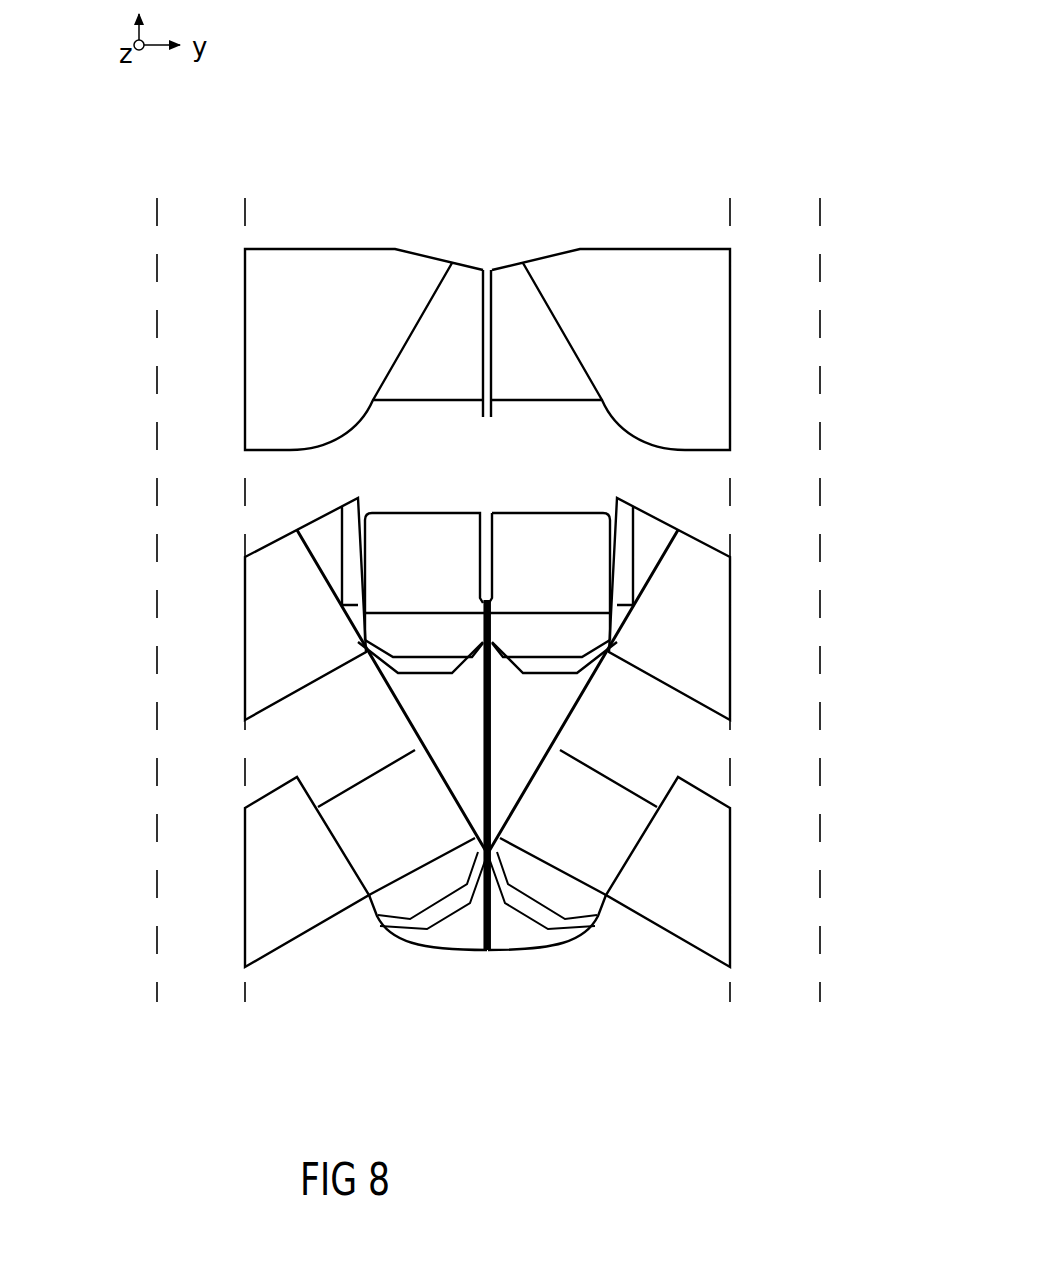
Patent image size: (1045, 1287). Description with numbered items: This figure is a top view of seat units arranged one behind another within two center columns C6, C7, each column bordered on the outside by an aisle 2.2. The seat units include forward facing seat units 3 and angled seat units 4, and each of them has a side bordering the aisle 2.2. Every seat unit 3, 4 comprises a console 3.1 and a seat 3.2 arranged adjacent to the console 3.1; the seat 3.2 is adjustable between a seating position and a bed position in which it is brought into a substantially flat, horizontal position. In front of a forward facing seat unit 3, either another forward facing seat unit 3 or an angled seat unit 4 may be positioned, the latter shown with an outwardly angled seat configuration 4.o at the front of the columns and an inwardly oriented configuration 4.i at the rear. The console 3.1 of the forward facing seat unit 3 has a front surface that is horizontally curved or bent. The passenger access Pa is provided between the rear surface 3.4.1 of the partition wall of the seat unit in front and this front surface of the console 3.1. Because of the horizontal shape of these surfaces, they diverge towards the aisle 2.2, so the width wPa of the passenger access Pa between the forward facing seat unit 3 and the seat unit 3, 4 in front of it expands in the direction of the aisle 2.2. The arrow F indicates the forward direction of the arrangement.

The forward facing seat unit 3 is at (494, 690).
The angled seat unit 4 is at (490, 858).
The outwardly angled seat configuration 4.o is at (489, 349).
The inner wheel segment 4.i is at (240, 875).
The console 3.1 is at (693, 643).
The seat 3.2 is at (520, 535).
The rear surface of the partition wall 3.4.1 is at (680, 448).
The aisle 2.2 is at (208, 985).
The center column C6 is at (598, 985).
The center column C7 is at (338, 985).
The passenger access Pa is at (652, 480).
The width of the passenger access wPa is at (728, 452).
The force direction F is at (491, 172).